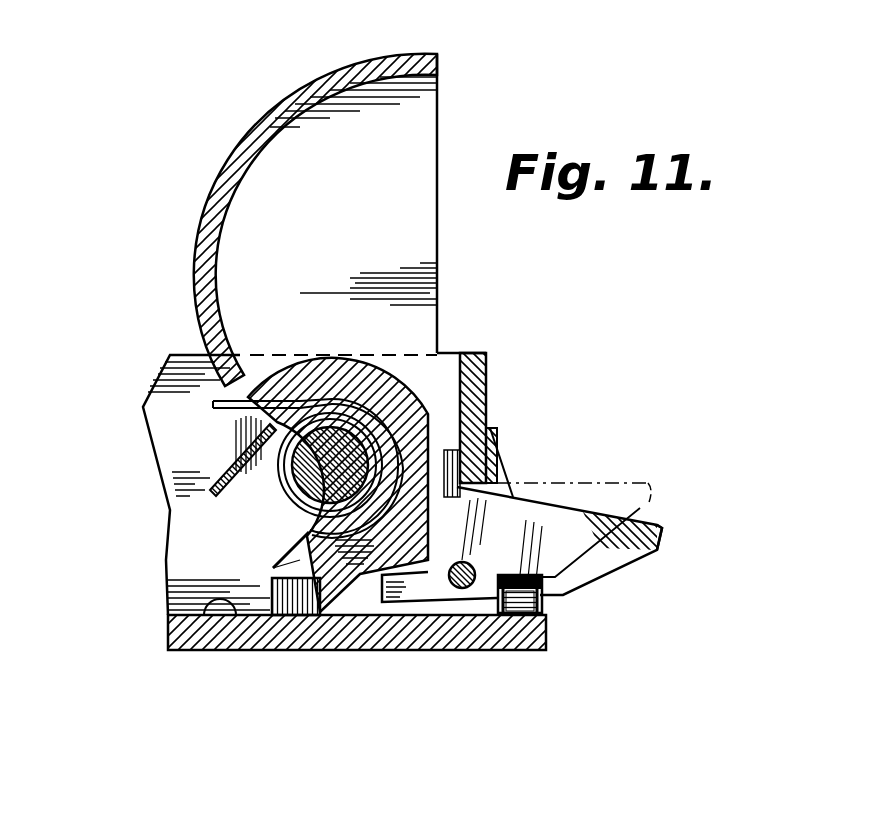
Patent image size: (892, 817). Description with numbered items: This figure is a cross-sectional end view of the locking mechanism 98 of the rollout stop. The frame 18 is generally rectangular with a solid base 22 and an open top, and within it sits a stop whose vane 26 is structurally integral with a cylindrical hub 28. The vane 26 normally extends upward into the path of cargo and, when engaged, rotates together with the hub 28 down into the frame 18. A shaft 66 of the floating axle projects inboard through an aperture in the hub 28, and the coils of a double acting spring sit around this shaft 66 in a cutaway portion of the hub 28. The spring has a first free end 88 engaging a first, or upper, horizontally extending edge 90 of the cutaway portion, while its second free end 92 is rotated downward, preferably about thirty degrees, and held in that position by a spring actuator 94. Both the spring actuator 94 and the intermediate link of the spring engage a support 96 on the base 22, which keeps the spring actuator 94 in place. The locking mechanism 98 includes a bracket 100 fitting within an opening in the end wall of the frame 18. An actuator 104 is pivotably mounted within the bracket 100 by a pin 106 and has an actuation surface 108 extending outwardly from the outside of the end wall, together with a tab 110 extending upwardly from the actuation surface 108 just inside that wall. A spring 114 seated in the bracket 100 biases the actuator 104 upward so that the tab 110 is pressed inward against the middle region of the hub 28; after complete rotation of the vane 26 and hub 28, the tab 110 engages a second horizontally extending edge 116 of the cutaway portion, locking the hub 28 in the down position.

The frame 18 is at (490, 370).
The base 22 is at (233, 618).
The vane 26 is at (215, 170).
The cylindrical hub 28 is at (400, 362).
The shaft 66 is at (300, 525).
The first free end 88 is at (213, 405).
The first horizontally extending edge 90 is at (235, 390).
The second free end 92 is at (213, 493).
The spring actuator 94 is at (318, 472).
The support 96 is at (297, 592).
The locking mechanism 98 is at (636, 446).
The bracket 100 is at (512, 464).
The actuator 104 is at (620, 490).
The pin 106 is at (470, 590).
The actuation surface 108 is at (670, 532).
The tab 110 is at (490, 414).
The spring 114 is at (541, 598).
The second horizontally extending edge 116 is at (440, 607).